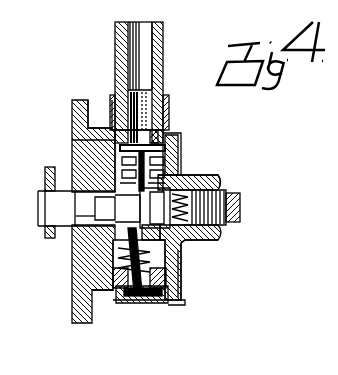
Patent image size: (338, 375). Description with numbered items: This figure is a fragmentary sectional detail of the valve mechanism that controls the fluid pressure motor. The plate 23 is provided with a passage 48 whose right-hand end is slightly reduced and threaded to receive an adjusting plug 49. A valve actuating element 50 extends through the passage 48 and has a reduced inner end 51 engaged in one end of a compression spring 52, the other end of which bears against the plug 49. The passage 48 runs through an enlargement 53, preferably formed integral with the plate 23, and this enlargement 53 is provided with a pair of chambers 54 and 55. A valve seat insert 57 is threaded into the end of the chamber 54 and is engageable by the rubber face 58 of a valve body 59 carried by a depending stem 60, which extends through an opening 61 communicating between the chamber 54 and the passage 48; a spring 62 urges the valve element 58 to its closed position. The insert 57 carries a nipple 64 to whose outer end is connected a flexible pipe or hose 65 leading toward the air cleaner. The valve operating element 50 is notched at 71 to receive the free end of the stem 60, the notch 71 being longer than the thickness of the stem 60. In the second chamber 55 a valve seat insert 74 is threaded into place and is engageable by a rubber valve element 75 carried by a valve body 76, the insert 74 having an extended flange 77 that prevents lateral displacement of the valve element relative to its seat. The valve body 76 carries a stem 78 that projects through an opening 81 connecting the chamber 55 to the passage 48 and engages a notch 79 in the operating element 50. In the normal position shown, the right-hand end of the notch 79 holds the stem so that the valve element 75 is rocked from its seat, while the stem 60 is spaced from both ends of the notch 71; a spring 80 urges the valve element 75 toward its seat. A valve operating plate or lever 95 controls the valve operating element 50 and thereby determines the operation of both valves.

The plate 23 is at (73, 100).
The passage 48 is at (74, 166).
The adjusting plug 49 is at (238, 196).
The valve actuating element 50 is at (40, 204).
The reduced inner end 51 is at (183, 246).
The compression spring 52 is at (204, 243).
The enlargement 53 is at (168, 130).
The chamber 54 is at (166, 174).
The chamber 55 is at (191, 274).
The valve seat insert 57 is at (100, 124).
The rubber face 58 is at (157, 90).
The valve body 59 is at (170, 150).
The depending stem 60 is at (118, 200).
The opening 61 is at (186, 181).
The spring 62 is at (80, 143).
The nipple 64 is at (113, 92).
The flexible pipe or hose 65 is at (163, 46).
The notch 71 is at (155, 208).
The valve seat insert 74 is at (100, 291).
The rubber valve element 75 is at (128, 304).
The valve body 76 is at (146, 305).
The extended flange 77 is at (173, 303).
The stem 78 is at (126, 208).
The notch 79 is at (84, 218).
The spring 80 is at (112, 266).
The opening 81 is at (130, 238).
The valve operating plate or lever 95 is at (45, 232).